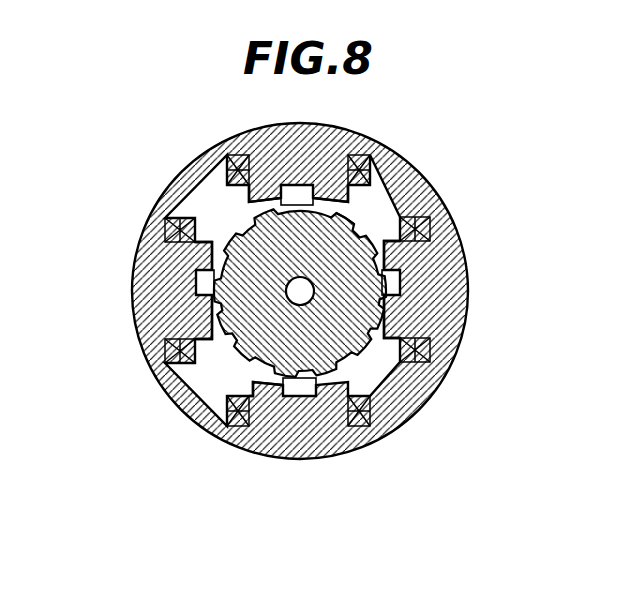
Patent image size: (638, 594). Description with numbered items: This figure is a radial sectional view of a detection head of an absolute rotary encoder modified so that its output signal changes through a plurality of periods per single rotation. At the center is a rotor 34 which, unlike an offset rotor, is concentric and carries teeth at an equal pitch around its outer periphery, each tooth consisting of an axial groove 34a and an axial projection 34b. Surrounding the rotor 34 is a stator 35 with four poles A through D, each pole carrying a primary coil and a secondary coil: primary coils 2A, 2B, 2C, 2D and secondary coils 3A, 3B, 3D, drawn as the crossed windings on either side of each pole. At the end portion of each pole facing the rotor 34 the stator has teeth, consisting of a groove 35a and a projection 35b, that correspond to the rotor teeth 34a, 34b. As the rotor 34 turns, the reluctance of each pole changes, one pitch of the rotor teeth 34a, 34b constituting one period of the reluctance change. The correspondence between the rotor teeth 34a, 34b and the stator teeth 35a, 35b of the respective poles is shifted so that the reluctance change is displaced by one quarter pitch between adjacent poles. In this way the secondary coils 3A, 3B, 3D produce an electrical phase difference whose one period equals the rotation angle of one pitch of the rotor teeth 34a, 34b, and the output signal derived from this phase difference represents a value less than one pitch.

The stator 35 is at (204, 148).
The rotor 34 is at (360, 360).
The axial groove 34a is at (357, 228).
The axial projection 34b is at (345, 215).
The primary coil 2A is at (359, 153).
The secondary coil 3A is at (368, 178).
The primary coil 2B is at (430, 229).
The secondary coil 3B is at (406, 244).
The primary coil 2C is at (369, 398).
The groove 35a is at (290, 397).
The projection 35b is at (253, 382).
The primary coil 2D is at (165, 358).
The secondary coil 3D is at (188, 366).